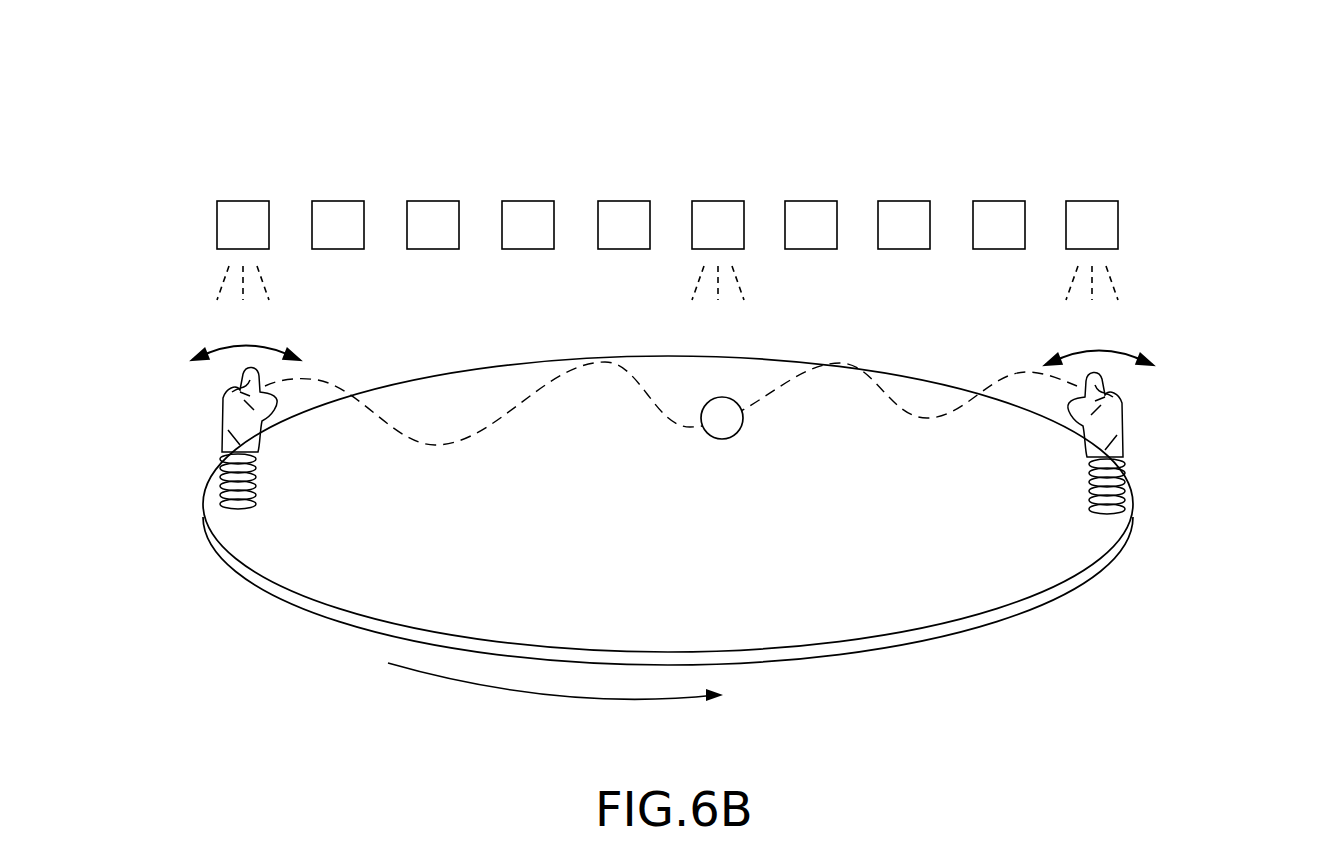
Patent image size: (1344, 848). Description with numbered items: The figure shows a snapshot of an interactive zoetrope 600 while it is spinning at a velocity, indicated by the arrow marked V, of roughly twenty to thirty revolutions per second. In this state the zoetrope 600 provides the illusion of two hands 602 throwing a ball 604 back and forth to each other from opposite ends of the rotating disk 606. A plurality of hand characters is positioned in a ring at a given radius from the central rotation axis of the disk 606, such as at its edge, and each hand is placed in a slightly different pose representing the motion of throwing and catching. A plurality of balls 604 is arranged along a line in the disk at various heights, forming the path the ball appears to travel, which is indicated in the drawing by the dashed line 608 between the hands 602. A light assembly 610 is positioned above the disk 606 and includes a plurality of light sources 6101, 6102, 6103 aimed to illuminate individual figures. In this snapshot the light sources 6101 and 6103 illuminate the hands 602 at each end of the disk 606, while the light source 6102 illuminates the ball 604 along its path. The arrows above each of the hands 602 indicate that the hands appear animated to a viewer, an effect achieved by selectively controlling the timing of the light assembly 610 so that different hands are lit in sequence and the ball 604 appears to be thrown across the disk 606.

The interactive zoetrope 600 is at (1052, 134).
The light assembly 610 is at (597, 138).
The light source 6101 is at (243, 201).
The light source 6102 is at (719, 201).
The light source 6103 is at (1118, 212).
The hands 602 is at (185, 455).
The ball 604 is at (745, 452).
The disk 606 is at (1068, 578).
The ball trajectory 608 is at (409, 449).